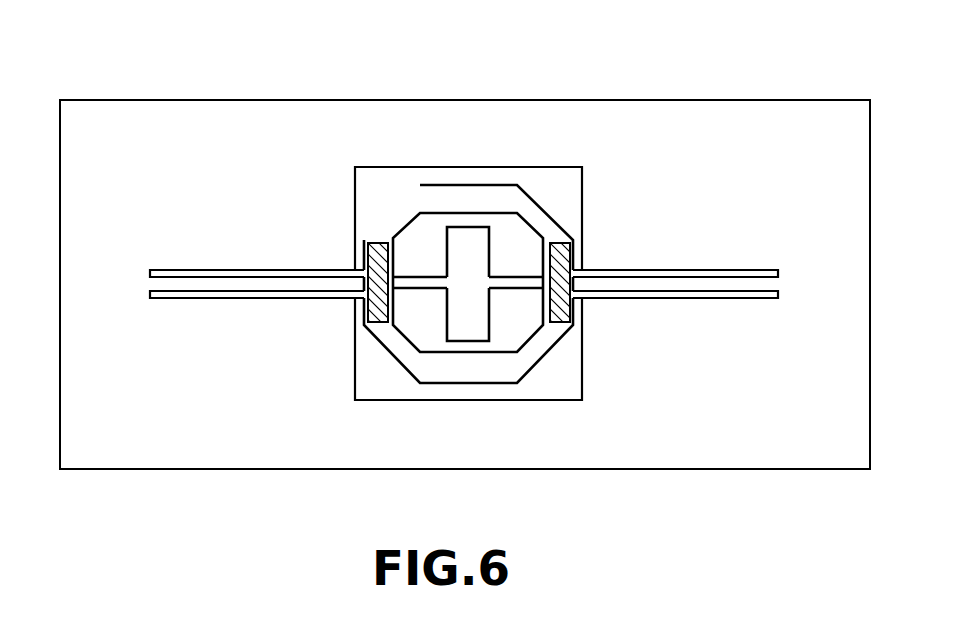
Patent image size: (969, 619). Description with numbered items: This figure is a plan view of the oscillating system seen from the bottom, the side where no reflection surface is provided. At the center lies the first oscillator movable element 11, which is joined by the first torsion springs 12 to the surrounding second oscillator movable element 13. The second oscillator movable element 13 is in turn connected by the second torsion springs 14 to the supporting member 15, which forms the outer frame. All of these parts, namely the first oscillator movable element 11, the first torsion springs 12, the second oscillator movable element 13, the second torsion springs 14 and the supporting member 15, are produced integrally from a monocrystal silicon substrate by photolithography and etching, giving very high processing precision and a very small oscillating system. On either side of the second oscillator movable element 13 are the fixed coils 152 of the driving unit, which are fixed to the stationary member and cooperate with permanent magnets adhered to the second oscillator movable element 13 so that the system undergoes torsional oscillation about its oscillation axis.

The first oscillator movable element 11 is at (492, 228).
The first torsion springs 12 is at (513, 283).
The second oscillator movable element 13 is at (412, 365).
The second torsion springs 14 is at (330, 285).
The supporting member 15 is at (728, 128).
The fixed coils 152 is at (383, 253).